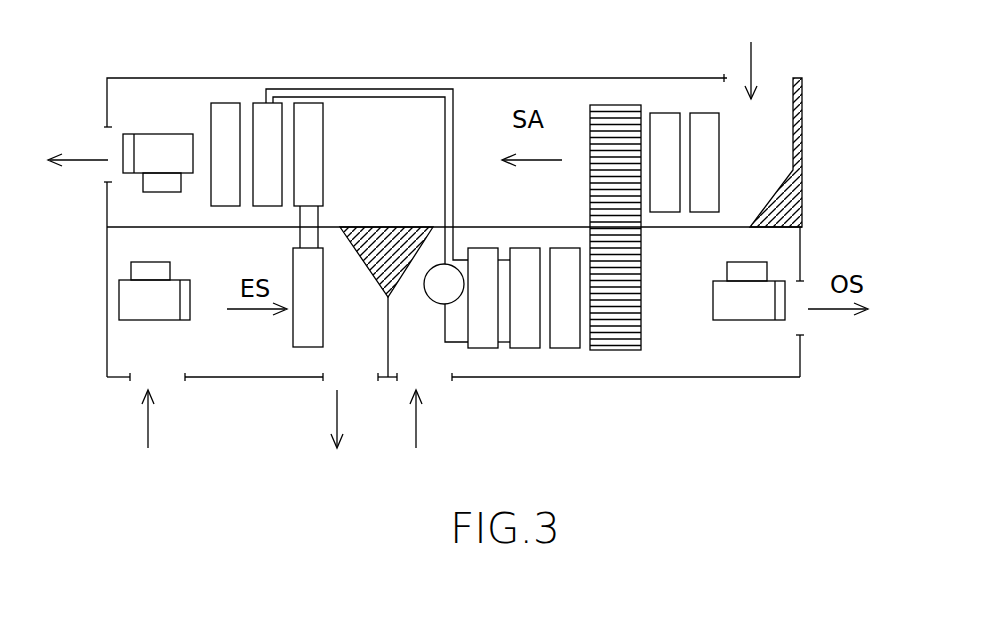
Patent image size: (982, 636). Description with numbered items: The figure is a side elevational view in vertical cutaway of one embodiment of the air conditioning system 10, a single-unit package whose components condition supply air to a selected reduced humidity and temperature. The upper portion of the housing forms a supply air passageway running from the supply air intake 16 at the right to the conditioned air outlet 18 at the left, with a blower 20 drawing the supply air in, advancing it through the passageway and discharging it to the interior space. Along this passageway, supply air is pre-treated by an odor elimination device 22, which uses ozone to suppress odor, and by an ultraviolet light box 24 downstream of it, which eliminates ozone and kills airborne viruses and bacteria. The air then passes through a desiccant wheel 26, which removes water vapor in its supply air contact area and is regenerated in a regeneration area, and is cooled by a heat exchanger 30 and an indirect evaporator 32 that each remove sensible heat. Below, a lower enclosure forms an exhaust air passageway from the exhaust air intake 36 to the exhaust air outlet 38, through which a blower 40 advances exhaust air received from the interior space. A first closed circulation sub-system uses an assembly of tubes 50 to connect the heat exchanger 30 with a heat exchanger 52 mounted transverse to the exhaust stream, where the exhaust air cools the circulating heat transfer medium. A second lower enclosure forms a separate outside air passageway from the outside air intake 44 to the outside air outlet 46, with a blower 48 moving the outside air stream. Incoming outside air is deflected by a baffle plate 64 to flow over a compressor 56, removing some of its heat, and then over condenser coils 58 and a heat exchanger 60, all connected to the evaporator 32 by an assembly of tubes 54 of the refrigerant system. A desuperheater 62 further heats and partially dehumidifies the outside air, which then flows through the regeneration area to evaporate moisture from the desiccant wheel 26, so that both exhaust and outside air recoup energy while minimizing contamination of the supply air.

The air conditioning system 10 is at (492, 75).
The supply air intake 16 is at (782, 80).
The conditioned air outlet 18 is at (107, 127).
The blower 20 is at (148, 152).
The odor elimination device 22 is at (713, 114).
The ultraviolet light box 24 is at (668, 114).
The desiccant wheel 26 is at (604, 118).
The heat exchanger 30 is at (302, 107).
The indirect evaporator 32 is at (258, 107).
The exhaust air intake 36 is at (168, 377).
The exhaust air outlet 38 is at (365, 377).
The blower 40 is at (153, 310).
The outside air intake 44 is at (433, 377).
The outside air outlet 46 is at (806, 316).
The blower 48 is at (730, 310).
The assembly of tubes 50 is at (300, 235).
The heat exchanger 52 is at (307, 342).
The assembly of tubes 54 is at (453, 172).
The compressor 56 is at (433, 290).
The condenser coils 58 is at (480, 342).
The heat exchanger 60 is at (523, 342).
The desuperheater 62 is at (567, 342).
The baffle plate 64 is at (387, 298).